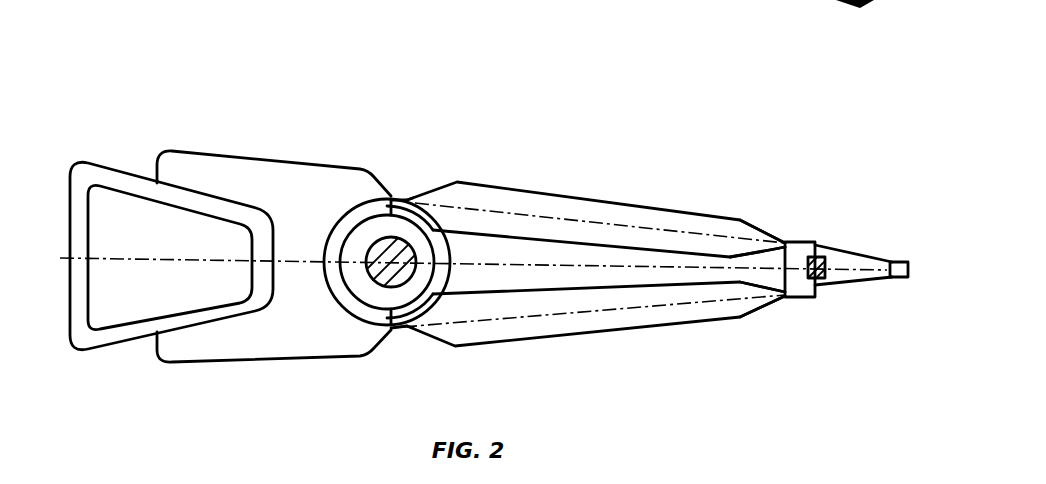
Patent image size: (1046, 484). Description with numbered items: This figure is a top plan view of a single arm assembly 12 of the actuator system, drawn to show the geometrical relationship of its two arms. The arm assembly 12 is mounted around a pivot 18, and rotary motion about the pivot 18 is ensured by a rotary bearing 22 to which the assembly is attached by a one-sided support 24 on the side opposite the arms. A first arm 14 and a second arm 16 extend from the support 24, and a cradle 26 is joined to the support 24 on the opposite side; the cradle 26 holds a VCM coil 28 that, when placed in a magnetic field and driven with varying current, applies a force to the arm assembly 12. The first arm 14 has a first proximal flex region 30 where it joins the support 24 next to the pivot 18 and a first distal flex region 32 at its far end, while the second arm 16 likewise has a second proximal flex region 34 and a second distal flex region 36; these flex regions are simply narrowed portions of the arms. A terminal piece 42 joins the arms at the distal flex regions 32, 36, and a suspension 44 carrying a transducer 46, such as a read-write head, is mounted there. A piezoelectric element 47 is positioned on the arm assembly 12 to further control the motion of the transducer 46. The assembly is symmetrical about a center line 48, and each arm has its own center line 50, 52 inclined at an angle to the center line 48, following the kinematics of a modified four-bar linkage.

The arm assembly 12 is at (550, 100).
The first arm 14 is at (585, 207).
The second arm 16 is at (672, 316).
The pivot 18 is at (417, 257).
The rotary bearing 22 is at (372, 293).
The one-sided support 24 is at (350, 210).
The cradle 26 is at (243, 172).
The VCM coil 28 is at (118, 180).
The first proximal flex region 30 is at (398, 201).
The first distal flex region 32 is at (763, 240).
The second proximal flex region 34 is at (401, 326).
The second distal flex region 36 is at (757, 307).
The terminal piece 42 is at (802, 247).
The suspension 44 is at (855, 282).
The transducer 46 is at (902, 262).
The piezoelectric element 47 is at (822, 260).
The center line 48 is at (578, 266).
The center line 50 is at (645, 228).
The center line 52 is at (510, 316).